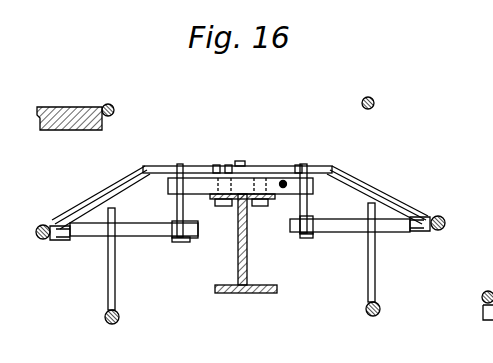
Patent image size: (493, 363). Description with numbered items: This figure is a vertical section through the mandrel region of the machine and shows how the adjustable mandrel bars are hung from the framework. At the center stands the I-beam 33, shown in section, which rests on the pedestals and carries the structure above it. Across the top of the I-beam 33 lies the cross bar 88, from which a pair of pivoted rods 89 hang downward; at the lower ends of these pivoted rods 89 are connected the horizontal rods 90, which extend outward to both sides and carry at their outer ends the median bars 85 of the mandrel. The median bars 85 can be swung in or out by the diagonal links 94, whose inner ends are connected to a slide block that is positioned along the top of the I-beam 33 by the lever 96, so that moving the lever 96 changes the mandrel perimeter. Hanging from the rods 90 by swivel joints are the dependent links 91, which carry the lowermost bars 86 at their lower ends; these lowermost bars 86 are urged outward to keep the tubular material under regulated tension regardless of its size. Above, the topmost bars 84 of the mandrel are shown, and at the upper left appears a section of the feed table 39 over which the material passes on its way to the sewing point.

The I-beam 33 is at (238, 255).
The feed table 39 is at (67, 107).
The topmost mandrel bars 84 is at (112, 105).
The median mandrel bars 85 is at (38, 228).
The lowermost mandrel bars 86 is at (105, 317).
The cross bar 88 is at (270, 178).
The pivoted rods 89 is at (179, 208).
The rods 90 is at (165, 231).
The dependent links 91 is at (116, 278).
The links 94 is at (100, 192).
The lever 96 is at (285, 181).